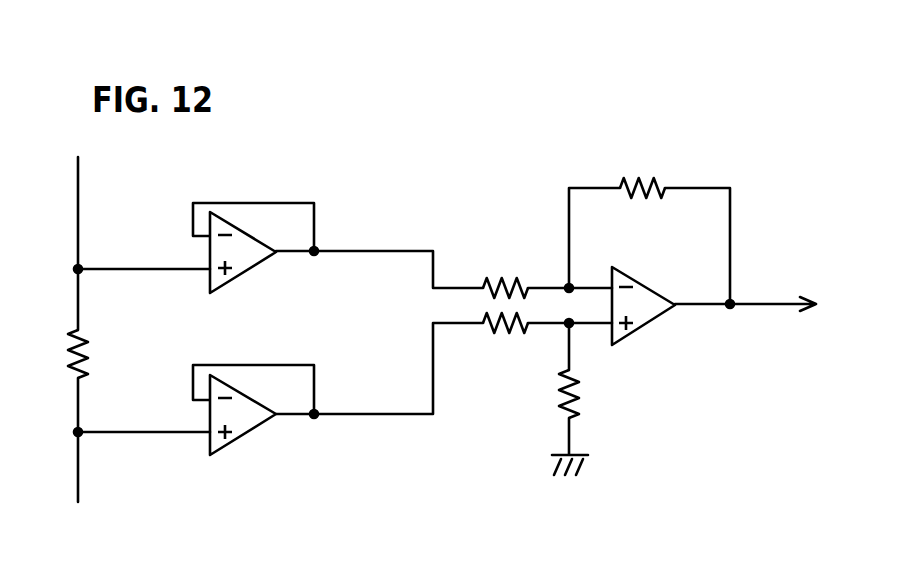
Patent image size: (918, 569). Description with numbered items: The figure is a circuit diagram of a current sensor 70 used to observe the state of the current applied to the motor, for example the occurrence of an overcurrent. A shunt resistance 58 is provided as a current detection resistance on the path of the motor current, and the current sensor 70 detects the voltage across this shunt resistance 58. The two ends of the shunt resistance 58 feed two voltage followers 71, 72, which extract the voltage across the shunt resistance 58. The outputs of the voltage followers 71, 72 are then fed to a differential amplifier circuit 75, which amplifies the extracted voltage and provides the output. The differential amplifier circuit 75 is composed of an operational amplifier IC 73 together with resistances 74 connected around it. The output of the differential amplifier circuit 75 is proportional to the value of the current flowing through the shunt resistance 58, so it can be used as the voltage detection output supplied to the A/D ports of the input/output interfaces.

The current sensor 70 is at (592, 70).
The shunt resistance 58 is at (67, 347).
The voltage follower 71 is at (258, 271).
The voltage follower 72 is at (258, 433).
The operational amplifier IC 73 is at (648, 325).
The resistances 74 is at (623, 178).
The differential amplifier circuit 75 is at (642, 395).